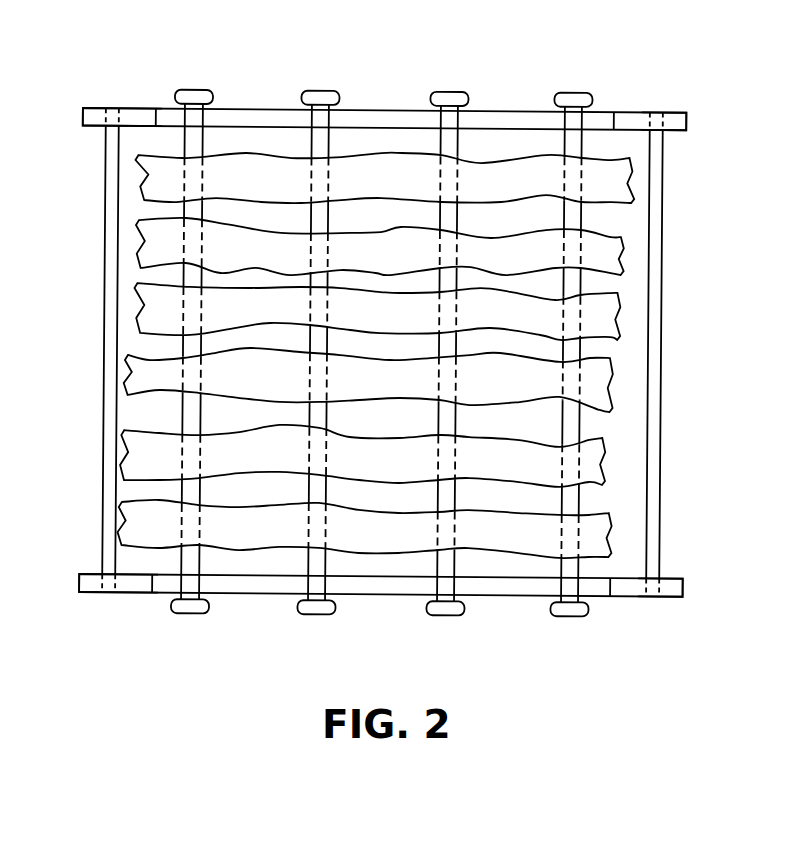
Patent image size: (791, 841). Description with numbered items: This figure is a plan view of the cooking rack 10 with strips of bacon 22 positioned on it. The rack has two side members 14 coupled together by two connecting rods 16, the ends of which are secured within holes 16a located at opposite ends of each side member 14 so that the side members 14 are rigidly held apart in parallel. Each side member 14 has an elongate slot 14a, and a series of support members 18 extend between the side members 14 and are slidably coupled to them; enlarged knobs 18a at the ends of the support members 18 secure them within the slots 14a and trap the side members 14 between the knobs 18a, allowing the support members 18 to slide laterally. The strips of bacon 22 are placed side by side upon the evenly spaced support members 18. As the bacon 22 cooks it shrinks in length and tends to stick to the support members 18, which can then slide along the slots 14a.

The cooking rack 10 is at (521, 86).
The side member 14 is at (255, 115).
The elongate slot 14a is at (620, 115).
The connecting rod 16 is at (108, 397).
The hole 16a is at (115, 110).
The support member 18 is at (187, 426).
The enlarged knob 18a is at (188, 91).
The strip of bacon 22 is at (148, 366).